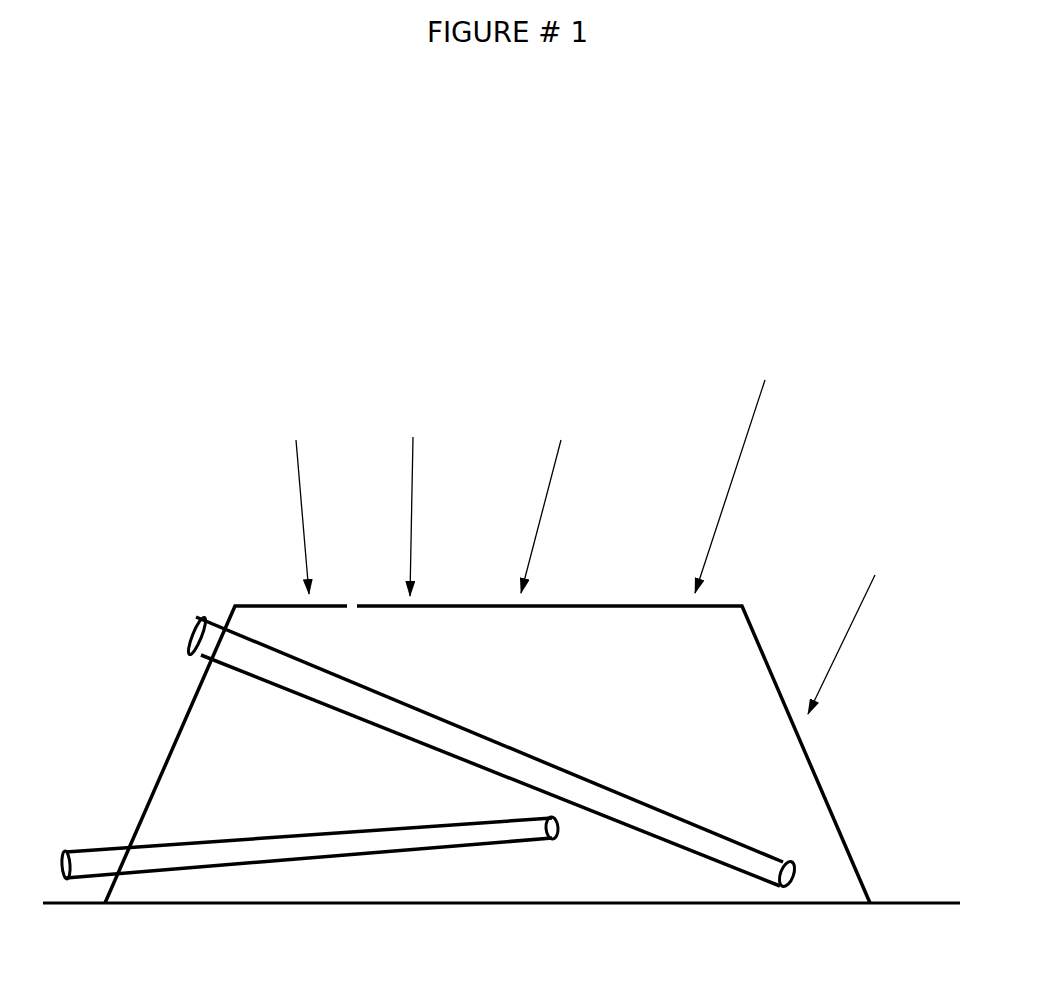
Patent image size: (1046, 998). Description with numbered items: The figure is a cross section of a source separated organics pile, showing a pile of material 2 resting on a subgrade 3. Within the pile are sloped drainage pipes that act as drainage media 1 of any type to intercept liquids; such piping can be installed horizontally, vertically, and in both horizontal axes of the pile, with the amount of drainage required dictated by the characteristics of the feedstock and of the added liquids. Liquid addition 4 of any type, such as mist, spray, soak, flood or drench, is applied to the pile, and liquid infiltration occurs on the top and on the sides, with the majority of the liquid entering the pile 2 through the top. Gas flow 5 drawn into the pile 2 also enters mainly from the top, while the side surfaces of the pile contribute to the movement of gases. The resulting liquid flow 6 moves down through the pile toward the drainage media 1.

The drainage media 1 is at (213, 616).
The pile of material 2 is at (487, 754).
The subgrade 3 is at (501, 938).
The liquid addition 4 is at (587, 531).
The gas flow 5 is at (537, 727).
The liquid flow 6 is at (364, 676).